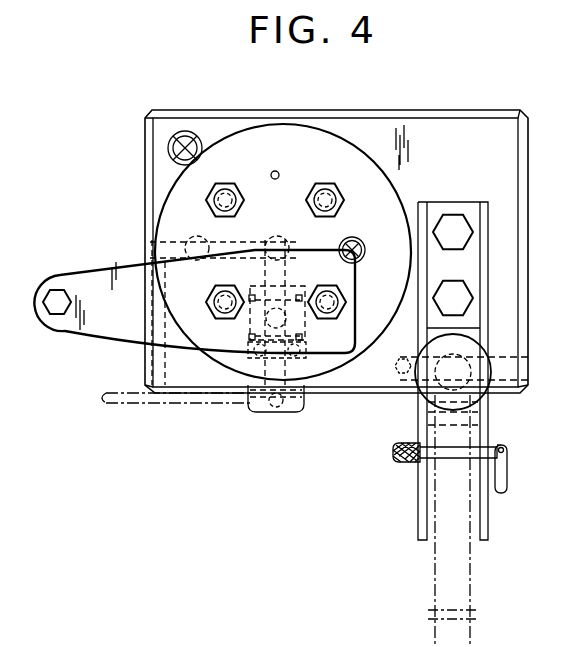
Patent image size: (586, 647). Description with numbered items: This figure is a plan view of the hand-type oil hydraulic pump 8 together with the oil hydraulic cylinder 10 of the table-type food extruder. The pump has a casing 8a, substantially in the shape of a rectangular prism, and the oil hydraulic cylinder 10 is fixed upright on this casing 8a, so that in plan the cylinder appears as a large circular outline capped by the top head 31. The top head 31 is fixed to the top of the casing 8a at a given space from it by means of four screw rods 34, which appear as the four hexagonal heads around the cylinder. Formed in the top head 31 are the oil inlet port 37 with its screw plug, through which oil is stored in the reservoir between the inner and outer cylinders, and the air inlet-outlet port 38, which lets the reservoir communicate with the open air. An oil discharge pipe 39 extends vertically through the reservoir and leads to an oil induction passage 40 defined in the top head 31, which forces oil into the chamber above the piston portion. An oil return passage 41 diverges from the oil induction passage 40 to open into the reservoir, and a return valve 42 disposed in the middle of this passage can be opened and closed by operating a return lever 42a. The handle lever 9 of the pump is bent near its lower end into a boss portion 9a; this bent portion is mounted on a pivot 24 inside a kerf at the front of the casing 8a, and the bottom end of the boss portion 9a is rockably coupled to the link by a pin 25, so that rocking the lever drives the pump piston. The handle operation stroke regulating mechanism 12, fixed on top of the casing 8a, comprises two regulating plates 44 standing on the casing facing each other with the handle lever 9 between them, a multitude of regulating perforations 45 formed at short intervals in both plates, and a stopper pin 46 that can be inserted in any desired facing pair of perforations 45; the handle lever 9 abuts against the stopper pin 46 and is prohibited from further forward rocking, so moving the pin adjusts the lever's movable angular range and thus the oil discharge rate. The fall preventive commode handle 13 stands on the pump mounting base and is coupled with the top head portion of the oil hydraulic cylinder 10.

The hand-type oil hydraulic pump 8 is at (530, 198).
The casing 8a is at (510, 158).
The handle lever 9 is at (466, 344).
The boss portion 9a is at (478, 424).
The oil hydraulic cylinder 10 is at (148, 174).
The handle operation stroke regulating mechanism 12 is at (503, 502).
The fall preventive commode handle 13 is at (52, 322).
The pivot 24 is at (403, 358).
The pin 25 is at (478, 404).
The top head 31 is at (326, 124).
The screw rods 34 is at (226, 186).
The oil inlet port 37 is at (358, 238).
The air inlet-outlet port 38 is at (275, 171).
The oil discharge pipe 39 is at (197, 236).
The oil induction passage 40 is at (272, 236).
The oil return passage 41 is at (290, 267).
The return valve 42 is at (252, 328).
The return lever 42a is at (228, 402).
The regulating plates 44 is at (422, 536).
The regulating perforations 45 is at (418, 432).
The stopper pin 46 is at (450, 457).